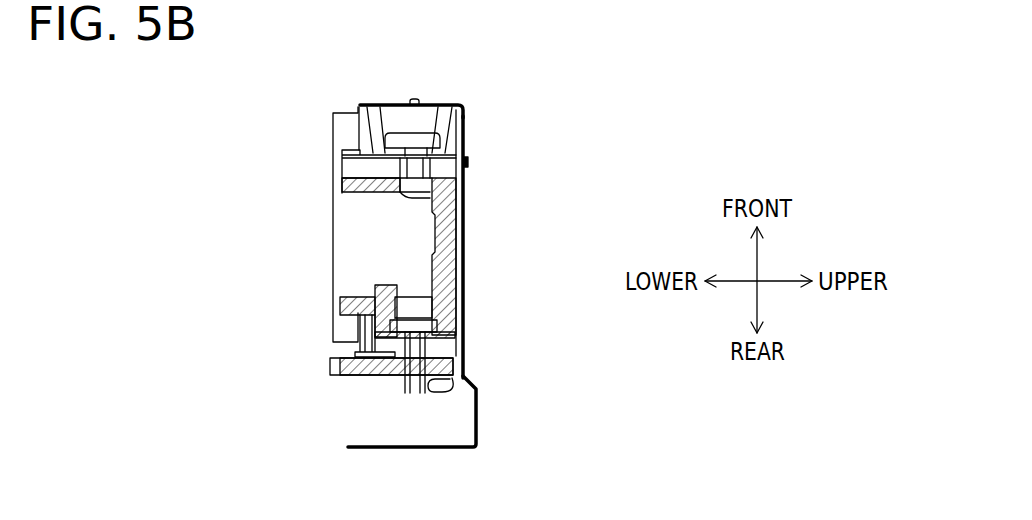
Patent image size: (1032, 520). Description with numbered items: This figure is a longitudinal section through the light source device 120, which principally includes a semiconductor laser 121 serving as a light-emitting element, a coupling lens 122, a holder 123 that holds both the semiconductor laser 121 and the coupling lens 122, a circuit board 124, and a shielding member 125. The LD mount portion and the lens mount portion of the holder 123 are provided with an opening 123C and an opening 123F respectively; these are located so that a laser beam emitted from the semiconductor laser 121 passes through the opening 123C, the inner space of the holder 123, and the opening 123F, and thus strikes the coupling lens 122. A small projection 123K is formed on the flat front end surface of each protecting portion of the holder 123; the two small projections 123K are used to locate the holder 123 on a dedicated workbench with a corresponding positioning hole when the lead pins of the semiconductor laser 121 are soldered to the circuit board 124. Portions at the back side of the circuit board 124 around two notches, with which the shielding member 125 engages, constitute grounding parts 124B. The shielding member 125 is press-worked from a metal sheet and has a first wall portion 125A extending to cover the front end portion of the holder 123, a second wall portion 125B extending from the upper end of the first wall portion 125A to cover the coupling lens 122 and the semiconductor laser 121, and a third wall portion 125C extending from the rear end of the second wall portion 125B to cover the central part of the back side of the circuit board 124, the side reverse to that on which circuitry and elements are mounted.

The light source device 120 is at (630, 96).
The semiconductor laser 121 is at (423, 313).
The coupling lens 122 is at (438, 143).
The holder 123 is at (327, 199).
The opening 123C is at (425, 283).
The opening 123F is at (413, 198).
The small projection 123K is at (412, 100).
The circuit board 124 is at (350, 372).
The grounding part 124B is at (455, 388).
The shielding member 125 is at (463, 272).
The first wall portion 125A is at (430, 102).
The second wall portion 125B is at (465, 230).
The third wall portion 125C is at (417, 449).